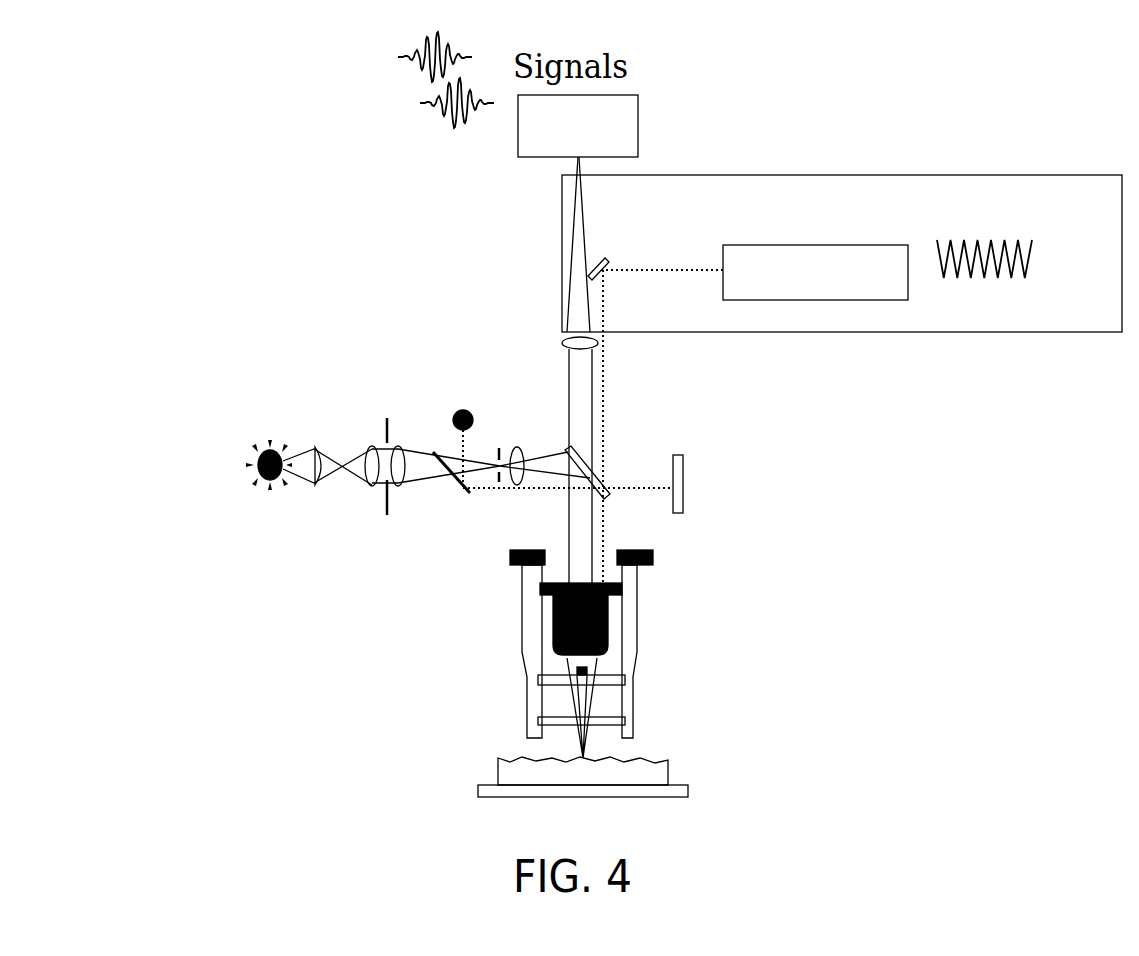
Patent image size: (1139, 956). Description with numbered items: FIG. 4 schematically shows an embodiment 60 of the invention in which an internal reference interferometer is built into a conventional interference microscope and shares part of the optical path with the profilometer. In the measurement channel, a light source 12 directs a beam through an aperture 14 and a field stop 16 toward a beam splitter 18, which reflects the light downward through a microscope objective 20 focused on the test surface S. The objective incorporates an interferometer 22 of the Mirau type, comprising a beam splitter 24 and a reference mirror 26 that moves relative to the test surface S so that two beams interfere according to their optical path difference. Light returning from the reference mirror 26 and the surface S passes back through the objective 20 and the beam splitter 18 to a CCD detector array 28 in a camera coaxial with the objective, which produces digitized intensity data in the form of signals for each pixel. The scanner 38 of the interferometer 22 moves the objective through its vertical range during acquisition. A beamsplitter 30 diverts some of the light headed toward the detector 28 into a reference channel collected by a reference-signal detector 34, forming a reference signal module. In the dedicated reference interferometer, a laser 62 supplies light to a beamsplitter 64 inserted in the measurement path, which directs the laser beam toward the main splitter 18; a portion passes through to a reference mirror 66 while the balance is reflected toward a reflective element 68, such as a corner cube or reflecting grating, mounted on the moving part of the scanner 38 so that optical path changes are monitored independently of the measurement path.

The light source 12 is at (258, 452).
The aperture 14 is at (385, 417).
The field stop 16 is at (502, 438).
The beam splitter 18 is at (587, 457).
The microscope objective 20 is at (605, 625).
The interferometer 22 is at (642, 673).
The beam splitter 24 is at (608, 714).
The reference mirror 26 is at (560, 685).
The detector array 28 is at (640, 118).
The beamsplitter 30 is at (605, 257).
The reference-signal detector 34 is at (861, 245).
The scanner 38 is at (640, 575).
The embodiment 60 is at (806, 133).
The laser 62 is at (462, 408).
The beamsplitter 64 is at (457, 489).
The reference mirror 66 is at (685, 475).
The reflective element 68 is at (606, 580).
The test surface S is at (643, 760).